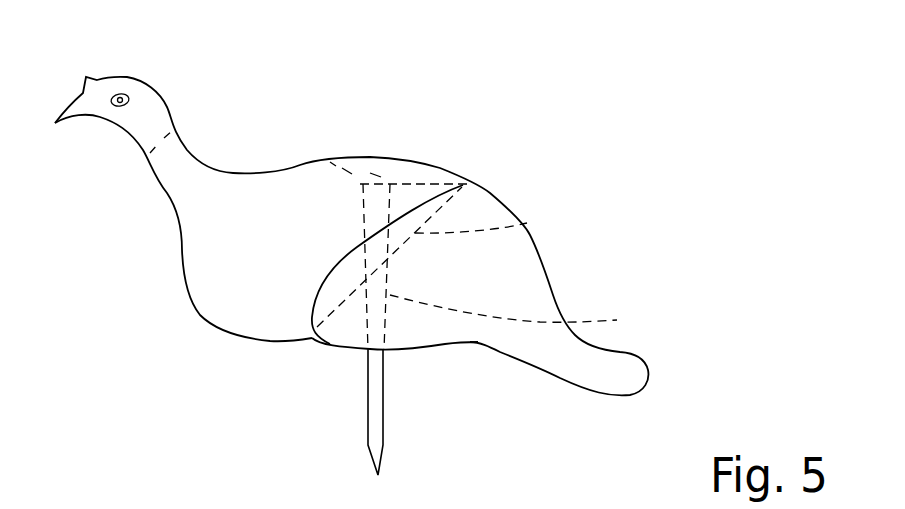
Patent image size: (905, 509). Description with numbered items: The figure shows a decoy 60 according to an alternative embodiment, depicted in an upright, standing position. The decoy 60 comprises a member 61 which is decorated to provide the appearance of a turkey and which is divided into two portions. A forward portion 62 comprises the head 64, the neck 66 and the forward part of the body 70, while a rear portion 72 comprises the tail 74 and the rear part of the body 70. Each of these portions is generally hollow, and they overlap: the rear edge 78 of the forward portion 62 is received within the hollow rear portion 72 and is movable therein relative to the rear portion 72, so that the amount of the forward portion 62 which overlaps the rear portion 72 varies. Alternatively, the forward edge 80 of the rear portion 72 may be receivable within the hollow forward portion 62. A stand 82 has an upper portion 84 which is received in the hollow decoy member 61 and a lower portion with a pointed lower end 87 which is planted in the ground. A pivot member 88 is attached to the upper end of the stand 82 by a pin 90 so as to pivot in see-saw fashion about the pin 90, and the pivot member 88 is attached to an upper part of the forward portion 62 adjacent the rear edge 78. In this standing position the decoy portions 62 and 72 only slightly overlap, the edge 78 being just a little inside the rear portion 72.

The decoy 60 is at (523, 138).
The member 61 is at (268, 338).
The forward portion 62 is at (270, 167).
The head 64 is at (117, 76).
The neck 66 is at (148, 168).
The body 70 is at (488, 203).
The rear portion 72 is at (543, 268).
The tail 74 is at (640, 360).
The rear edge 78 is at (527, 223).
The forward edge 80 is at (335, 263).
The stand 82 is at (385, 417).
The upper portion 84 is at (524, 315).
The pointed lower end 87 is at (378, 477).
The pivot member 88 is at (443, 167).
The pin 90 is at (387, 170).